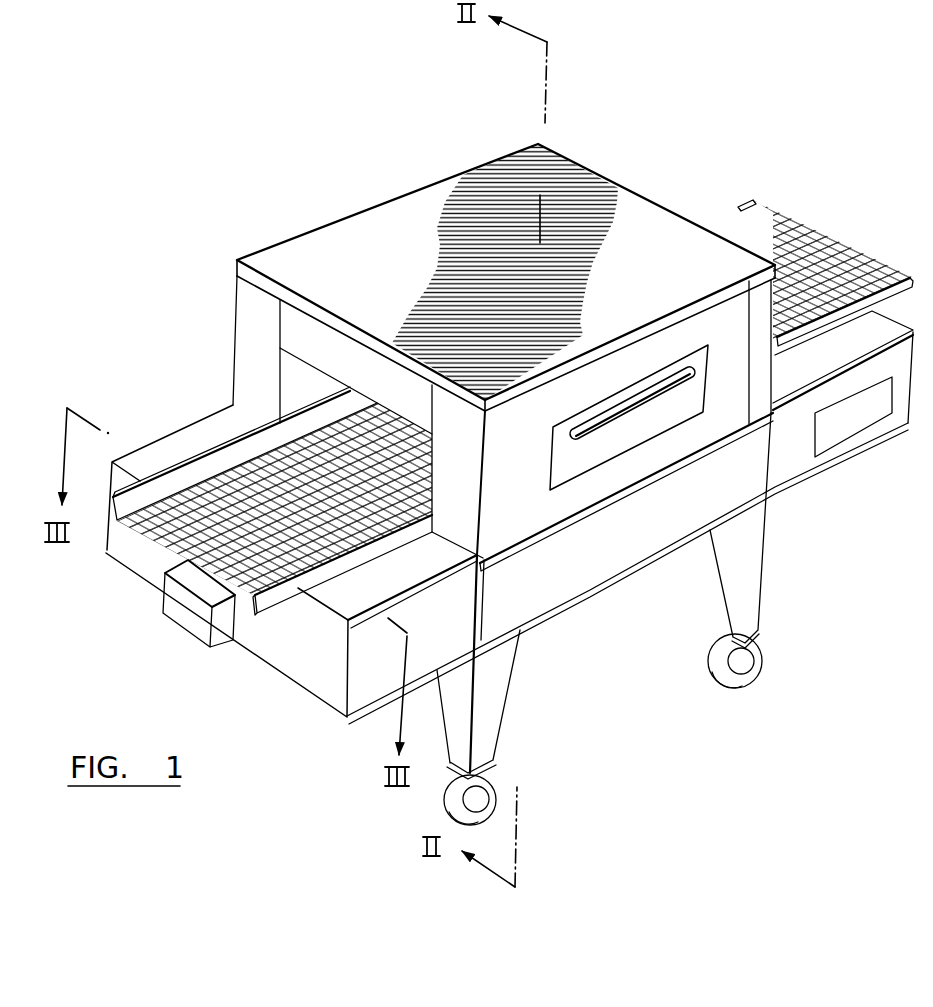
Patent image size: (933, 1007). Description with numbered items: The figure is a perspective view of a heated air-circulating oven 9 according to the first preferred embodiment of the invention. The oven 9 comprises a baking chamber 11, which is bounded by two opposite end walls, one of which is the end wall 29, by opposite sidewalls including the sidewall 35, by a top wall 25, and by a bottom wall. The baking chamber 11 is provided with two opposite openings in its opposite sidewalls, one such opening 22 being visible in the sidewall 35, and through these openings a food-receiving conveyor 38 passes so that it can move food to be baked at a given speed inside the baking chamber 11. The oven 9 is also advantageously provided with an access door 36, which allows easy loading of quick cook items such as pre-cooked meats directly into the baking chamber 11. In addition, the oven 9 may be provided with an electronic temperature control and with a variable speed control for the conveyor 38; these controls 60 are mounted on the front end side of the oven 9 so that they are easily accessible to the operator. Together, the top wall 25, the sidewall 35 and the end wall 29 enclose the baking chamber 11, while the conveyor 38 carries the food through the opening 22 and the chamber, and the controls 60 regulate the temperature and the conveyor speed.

The heated air-circulating oven 9 is at (221, 170).
The top wall 25 is at (418, 202).
The sidewall 35 is at (245, 300).
The opening 22 is at (301, 390).
The baking chamber 11 is at (316, 344).
The food-receiving conveyor 38 is at (173, 483).
The end wall 29 is at (745, 412).
The access door 36 is at (600, 453).
The controls 60 is at (887, 456).